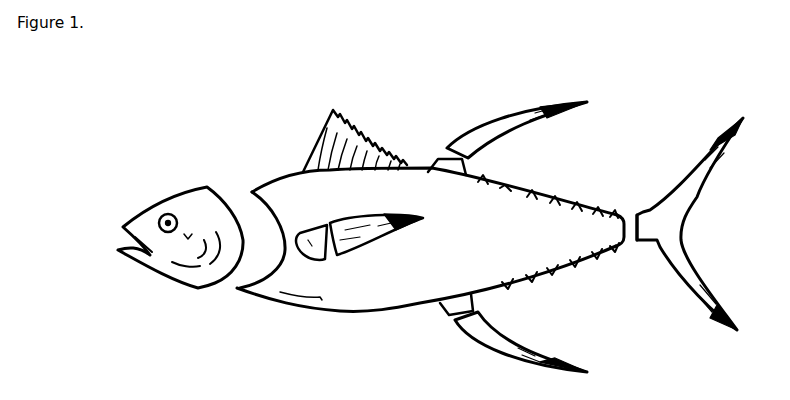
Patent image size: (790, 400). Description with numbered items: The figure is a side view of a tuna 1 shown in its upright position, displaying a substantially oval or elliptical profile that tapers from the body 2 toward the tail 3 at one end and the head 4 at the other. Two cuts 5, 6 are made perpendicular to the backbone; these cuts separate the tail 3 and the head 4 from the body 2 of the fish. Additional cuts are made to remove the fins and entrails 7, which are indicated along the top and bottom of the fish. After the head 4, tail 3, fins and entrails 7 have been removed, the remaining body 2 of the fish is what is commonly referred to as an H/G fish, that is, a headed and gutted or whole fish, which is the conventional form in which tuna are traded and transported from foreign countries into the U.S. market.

The tuna 1 is at (428, 187).
The body 2 is at (359, 224).
The tail 3 is at (685, 172).
The head 4 is at (172, 203).
The cut 5 is at (633, 228).
The cut 6 is at (250, 200).
The fins and entrails 7 is at (443, 152).